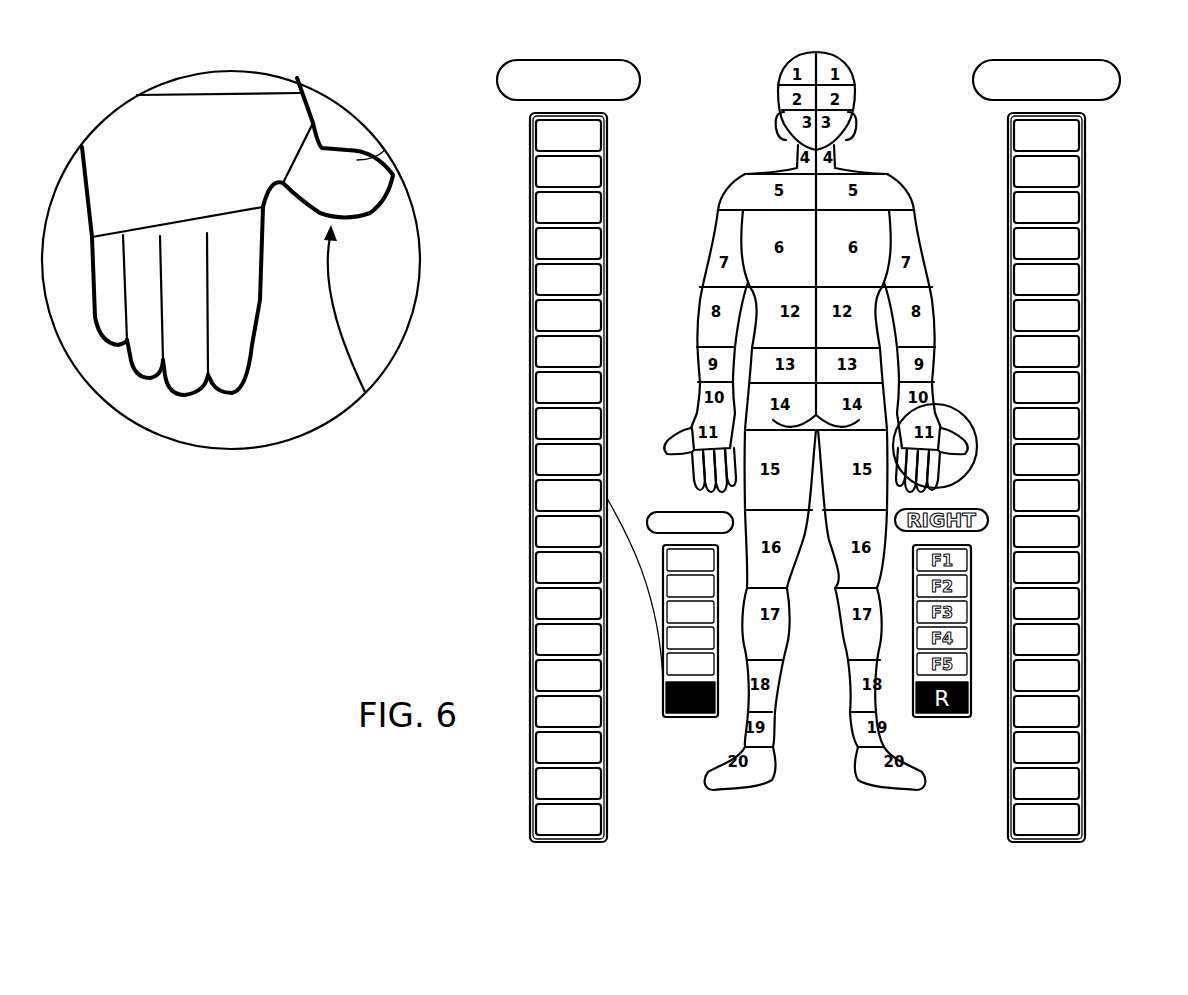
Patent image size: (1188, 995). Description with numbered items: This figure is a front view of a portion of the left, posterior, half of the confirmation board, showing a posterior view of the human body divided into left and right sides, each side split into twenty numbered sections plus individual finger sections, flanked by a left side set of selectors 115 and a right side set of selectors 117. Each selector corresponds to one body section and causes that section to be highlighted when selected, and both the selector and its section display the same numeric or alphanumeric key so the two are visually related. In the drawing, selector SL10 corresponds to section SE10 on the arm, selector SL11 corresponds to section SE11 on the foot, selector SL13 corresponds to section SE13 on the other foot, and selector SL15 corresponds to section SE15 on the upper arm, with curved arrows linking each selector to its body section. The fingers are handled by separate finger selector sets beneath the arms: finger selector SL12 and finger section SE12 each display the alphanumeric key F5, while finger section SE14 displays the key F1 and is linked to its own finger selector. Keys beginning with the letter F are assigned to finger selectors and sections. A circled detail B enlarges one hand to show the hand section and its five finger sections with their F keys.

The section SE10 is at (697, 308).
The section SE11 is at (716, 788).
The section SE12 is at (731, 486).
The section SE13 is at (849, 749).
The section SE14 is at (958, 435).
The section SE15 is at (915, 224).
The selector SL10 is at (688, 323).
The selector SL11 is at (532, 821).
The selector SL12 is at (660, 686).
The selector SL13 is at (1086, 783).
The selector SL15 is at (926, 245).
The left side set of selectors 115 is at (1003, 470).
The right side set of selectors 117 is at (570, 475).
The detail view of hand B is at (975, 458).